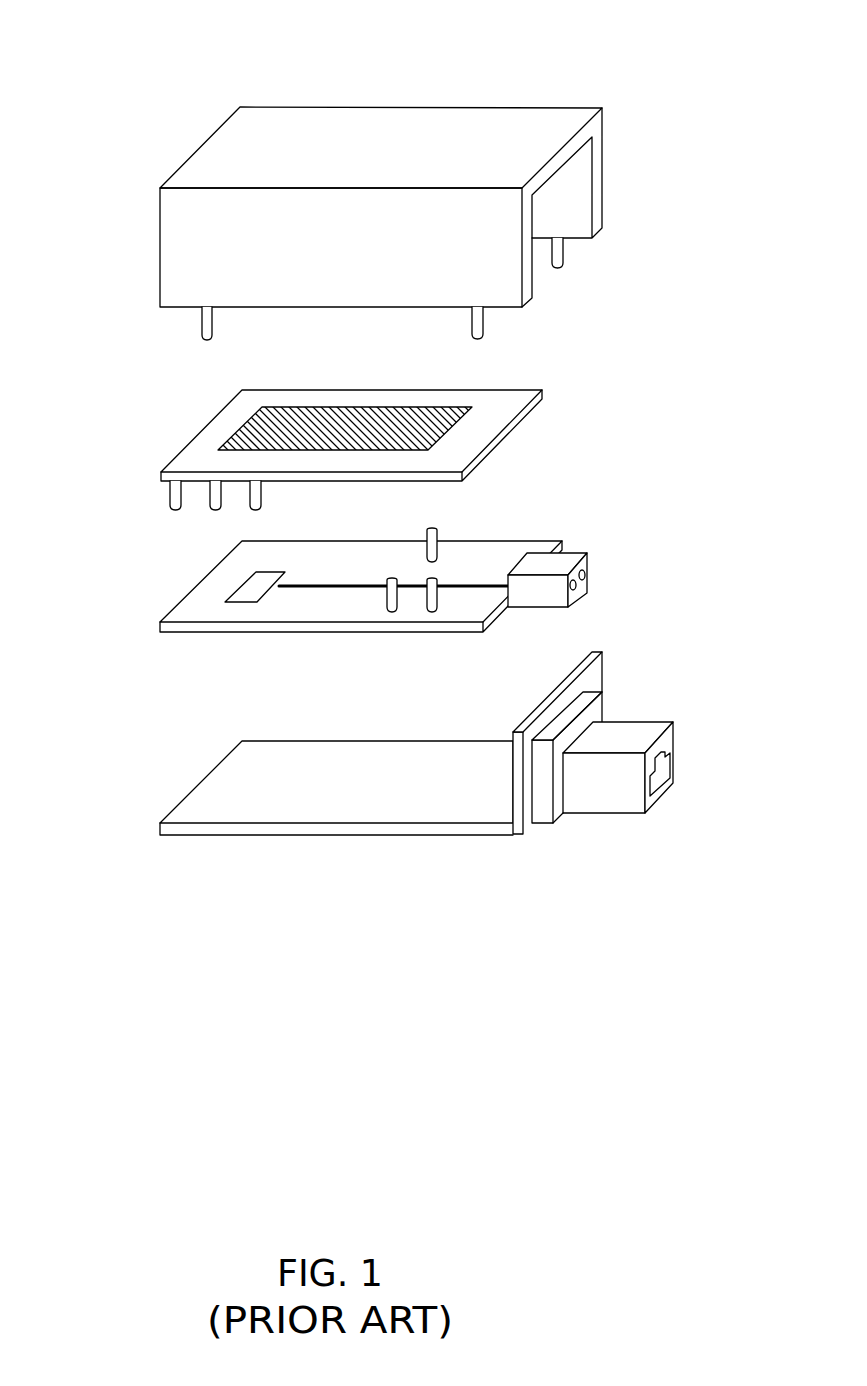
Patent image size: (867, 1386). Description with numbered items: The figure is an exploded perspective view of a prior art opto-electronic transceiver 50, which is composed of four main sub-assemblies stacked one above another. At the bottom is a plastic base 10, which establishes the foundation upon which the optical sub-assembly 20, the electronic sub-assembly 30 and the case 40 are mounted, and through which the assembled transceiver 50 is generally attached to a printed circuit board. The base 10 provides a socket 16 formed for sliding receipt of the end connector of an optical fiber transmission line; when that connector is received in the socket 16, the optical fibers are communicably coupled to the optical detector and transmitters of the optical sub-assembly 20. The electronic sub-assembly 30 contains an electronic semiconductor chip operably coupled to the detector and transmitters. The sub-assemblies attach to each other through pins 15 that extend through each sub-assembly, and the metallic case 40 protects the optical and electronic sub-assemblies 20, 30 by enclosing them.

The opto-electronic transceiver 50 is at (232, 43).
The case 40 is at (583, 107).
The electronic sub-assembly 30 is at (523, 388).
The optical sub-assembly 20 is at (550, 540).
The socket 16 is at (667, 768).
The base 10 is at (492, 835).
The pins 15 is at (200, 321).